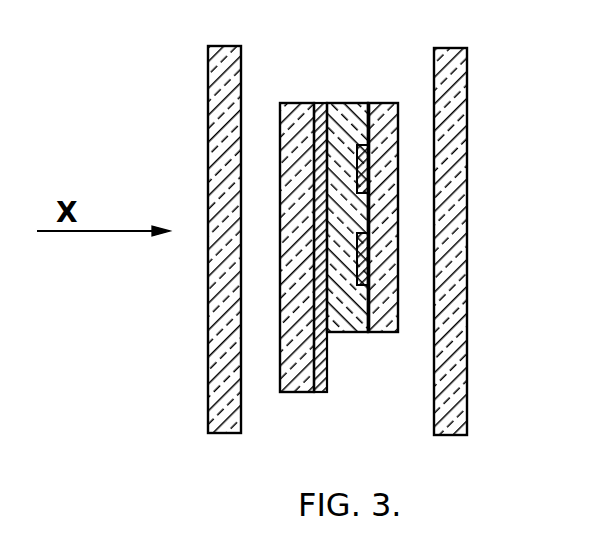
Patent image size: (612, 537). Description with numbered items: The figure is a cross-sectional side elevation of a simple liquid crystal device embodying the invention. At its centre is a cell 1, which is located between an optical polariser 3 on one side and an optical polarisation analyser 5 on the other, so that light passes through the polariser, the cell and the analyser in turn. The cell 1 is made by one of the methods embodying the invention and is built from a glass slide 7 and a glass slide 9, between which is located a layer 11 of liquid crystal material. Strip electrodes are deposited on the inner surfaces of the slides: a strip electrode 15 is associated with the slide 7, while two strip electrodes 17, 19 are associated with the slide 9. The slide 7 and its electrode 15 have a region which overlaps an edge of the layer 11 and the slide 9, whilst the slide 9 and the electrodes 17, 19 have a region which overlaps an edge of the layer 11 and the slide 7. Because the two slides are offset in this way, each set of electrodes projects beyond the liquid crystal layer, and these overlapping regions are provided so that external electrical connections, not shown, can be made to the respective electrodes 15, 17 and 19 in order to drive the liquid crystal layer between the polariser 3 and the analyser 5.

The cell 1 is at (307, 84).
The optical polariser 3 is at (241, 421).
The optical polarisation analyser 5 is at (466, 420).
The glass slide 7 is at (296, 393).
The glass slide 9 is at (386, 333).
The layer of liquid crystal material 11 is at (352, 125).
The strip electrode 15 is at (327, 391).
The strip electrode 17 is at (362, 145).
The strip electrode 19 is at (362, 333).